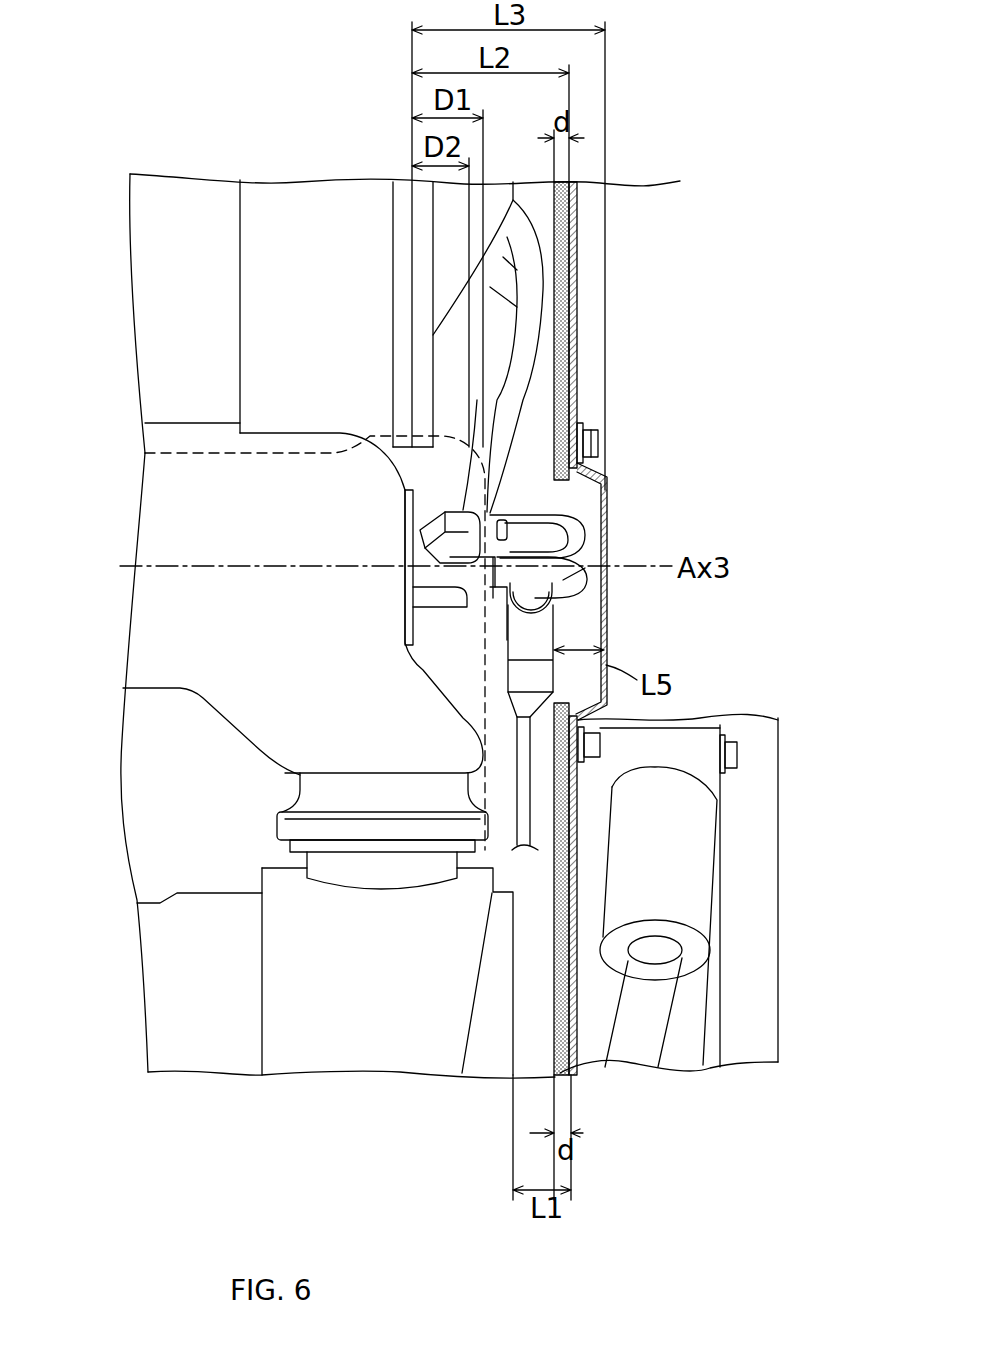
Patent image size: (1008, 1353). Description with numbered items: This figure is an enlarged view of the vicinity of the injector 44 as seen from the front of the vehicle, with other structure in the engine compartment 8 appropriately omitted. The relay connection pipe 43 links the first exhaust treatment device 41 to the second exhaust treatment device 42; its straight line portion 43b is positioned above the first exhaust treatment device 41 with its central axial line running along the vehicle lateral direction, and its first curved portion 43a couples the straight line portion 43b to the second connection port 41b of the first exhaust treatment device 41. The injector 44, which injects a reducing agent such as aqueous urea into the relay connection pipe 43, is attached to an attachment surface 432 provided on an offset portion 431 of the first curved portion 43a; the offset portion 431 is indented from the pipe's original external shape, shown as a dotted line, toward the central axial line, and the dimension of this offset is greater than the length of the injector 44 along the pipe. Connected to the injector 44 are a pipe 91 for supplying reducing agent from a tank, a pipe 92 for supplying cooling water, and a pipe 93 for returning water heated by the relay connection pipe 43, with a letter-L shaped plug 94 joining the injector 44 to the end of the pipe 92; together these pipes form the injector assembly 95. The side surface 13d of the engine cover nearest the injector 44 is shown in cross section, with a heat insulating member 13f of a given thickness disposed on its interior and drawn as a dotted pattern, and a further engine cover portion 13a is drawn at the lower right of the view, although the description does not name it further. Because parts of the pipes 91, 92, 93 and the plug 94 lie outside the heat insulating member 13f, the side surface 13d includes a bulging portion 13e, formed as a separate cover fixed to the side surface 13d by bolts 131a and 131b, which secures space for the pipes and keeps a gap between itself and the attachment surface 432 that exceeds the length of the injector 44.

The second exhaust treatment device 42 is at (270, 228).
The relay connection pipe 43 is at (265, 762).
The first curved portion 43a is at (313, 730).
The straight line portion 43b is at (163, 657).
The engine compartment 8 is at (169, 806).
The first exhaust treatment device 41 is at (223, 1007).
The second connection port 41b is at (383, 880).
The offset portion 431 is at (410, 510).
The attachment surface 432 is at (463, 490).
The injector 44 is at (488, 512).
The side surface 13d is at (556, 188).
The heat insulating member 13f is at (573, 230).
The bulging portion 13e is at (613, 490).
The wall portion 13a is at (672, 908).
The pipe 92 is at (532, 268).
The pipe 93 is at (575, 545).
The letter-L shaped plug 94 is at (557, 600).
The injector assembly 95 is at (565, 635).
The pipe 91 is at (520, 788).
The bolt 131a is at (607, 443).
The bolt 131b is at (600, 745).